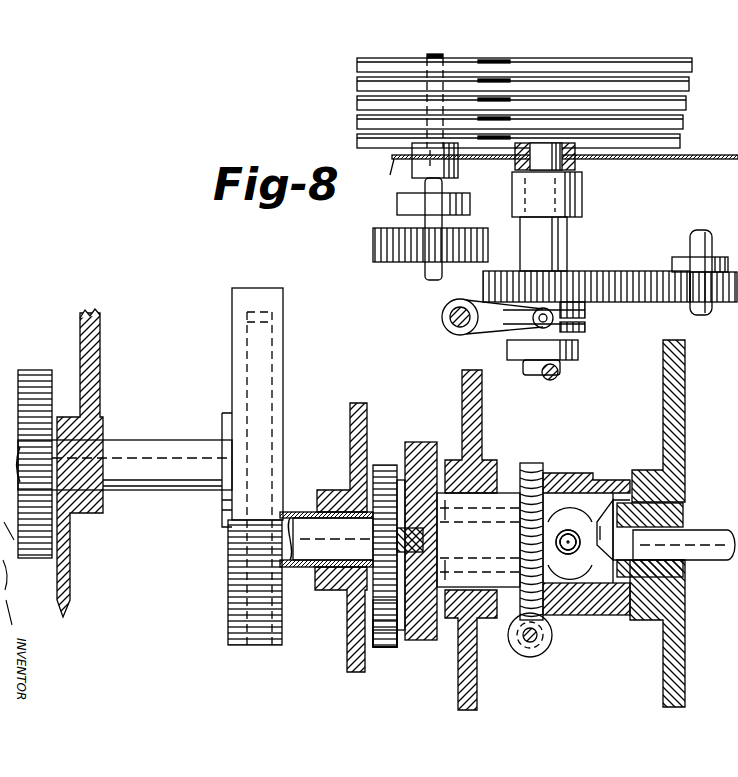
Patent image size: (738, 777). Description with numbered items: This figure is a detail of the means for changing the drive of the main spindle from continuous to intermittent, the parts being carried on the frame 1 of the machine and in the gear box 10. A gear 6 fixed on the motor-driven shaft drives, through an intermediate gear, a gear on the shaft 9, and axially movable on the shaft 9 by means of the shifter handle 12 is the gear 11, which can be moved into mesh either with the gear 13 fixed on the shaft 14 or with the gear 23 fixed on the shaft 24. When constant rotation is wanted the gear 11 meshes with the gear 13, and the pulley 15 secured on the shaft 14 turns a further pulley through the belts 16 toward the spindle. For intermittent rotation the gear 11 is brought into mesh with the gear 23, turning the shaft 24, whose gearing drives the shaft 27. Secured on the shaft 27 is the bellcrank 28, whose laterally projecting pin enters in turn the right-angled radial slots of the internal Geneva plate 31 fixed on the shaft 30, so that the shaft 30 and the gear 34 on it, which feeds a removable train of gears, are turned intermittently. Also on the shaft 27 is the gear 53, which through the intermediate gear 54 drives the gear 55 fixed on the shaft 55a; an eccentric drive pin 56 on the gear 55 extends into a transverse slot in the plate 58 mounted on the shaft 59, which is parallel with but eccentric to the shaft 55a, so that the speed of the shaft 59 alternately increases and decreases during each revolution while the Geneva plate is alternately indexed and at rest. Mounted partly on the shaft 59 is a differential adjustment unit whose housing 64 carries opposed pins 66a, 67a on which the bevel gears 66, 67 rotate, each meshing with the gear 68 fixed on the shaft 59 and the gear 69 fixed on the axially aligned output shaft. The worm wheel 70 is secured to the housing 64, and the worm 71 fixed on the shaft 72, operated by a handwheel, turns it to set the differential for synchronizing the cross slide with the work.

The frame 1 is at (100, 392).
The gear 6 is at (712, 532).
The shaft 9 is at (560, 372).
The gear box 10 is at (690, 155).
The gear 11 is at (576, 272).
The shifter handle 12 is at (442, 317).
The gear 13 is at (404, 262).
The shaft 14 is at (430, 55).
The pulley 15 is at (473, 60).
The belts 16 is at (648, 68).
The gear 23 is at (636, 272).
The shaft 24 is at (712, 236).
The shaft 27 is at (297, 590).
The bellcrank 28 is at (283, 482).
The shaft 30 is at (152, 440).
The internal Geneva plate 31 is at (283, 292).
The gear 34 is at (33, 372).
The gear 53 is at (378, 652).
The intermediate gear 54 is at (366, 672).
The gear 55 is at (380, 648).
The shaft 55a is at (326, 539).
The eccentric drive pin 56 is at (410, 527).
The plate 58 is at (427, 640).
The shaft 59 is at (447, 536).
The housing 64 is at (597, 612).
The bevel gear 66 is at (568, 541).
The bevel gear 67 is at (568, 542).
The pin 66a is at (568, 554).
The pin 67a is at (568, 542).
The gear 68 is at (530, 535).
The gear 69 is at (604, 530).
The worm wheel 70 is at (533, 462).
The worm 71 is at (545, 648).
The shaft 72 is at (527, 640).